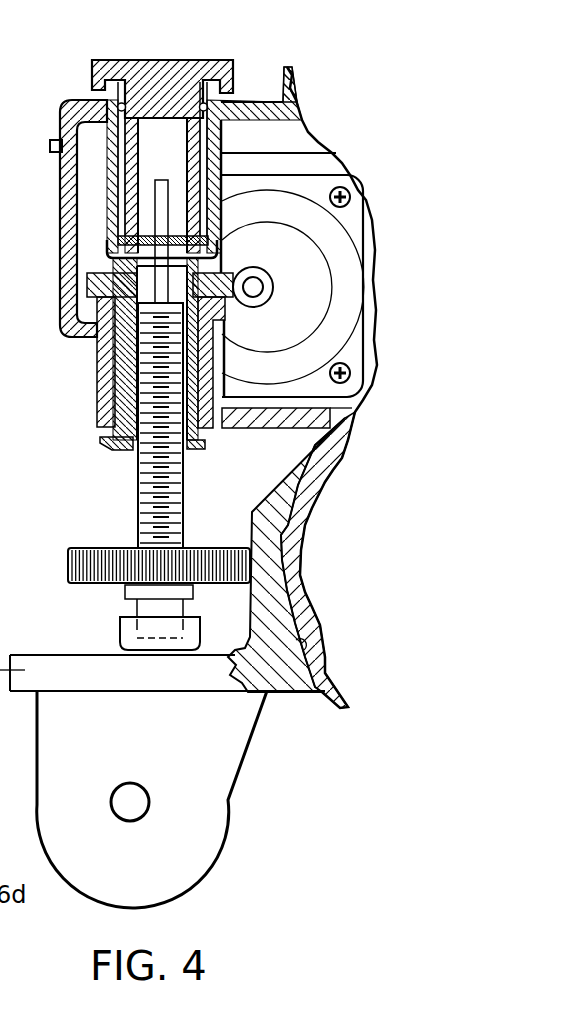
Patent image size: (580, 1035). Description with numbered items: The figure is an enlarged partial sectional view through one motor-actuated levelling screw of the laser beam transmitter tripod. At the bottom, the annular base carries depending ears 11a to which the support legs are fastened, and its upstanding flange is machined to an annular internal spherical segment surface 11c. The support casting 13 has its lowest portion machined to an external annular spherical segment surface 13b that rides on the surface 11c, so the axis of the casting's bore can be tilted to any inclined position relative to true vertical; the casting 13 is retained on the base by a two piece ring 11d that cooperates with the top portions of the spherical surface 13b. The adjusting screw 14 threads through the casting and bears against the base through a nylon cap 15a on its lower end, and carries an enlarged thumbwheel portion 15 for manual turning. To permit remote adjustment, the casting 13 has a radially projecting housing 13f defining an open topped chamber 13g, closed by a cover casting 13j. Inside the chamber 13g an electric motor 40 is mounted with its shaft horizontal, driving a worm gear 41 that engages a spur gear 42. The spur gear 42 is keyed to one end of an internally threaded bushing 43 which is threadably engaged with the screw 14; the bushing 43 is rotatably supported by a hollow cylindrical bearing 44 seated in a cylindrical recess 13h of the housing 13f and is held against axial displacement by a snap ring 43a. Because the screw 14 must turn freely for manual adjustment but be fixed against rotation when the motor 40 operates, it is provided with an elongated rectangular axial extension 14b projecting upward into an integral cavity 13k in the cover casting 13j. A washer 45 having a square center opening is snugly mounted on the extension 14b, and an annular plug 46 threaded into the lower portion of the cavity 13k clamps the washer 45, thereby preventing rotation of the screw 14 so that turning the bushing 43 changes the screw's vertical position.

The depending ears 11a is at (233, 802).
The annular internal spherical segment surface 11c is at (258, 691).
The two piece ring 11d is at (268, 541).
The support casting 13 is at (332, 404).
The external annular spherical segment surface 13b is at (306, 609).
The radially projecting housing 13f is at (72, 185).
The open topped chamber 13g is at (83, 246).
The cylindrical recess 13h is at (120, 398).
The cover casting 13j is at (250, 102).
The integral cavity 13k is at (190, 134).
The adjusting screw 14 is at (143, 508).
The elongated rectangular axial extension 14b is at (130, 172).
The thumbwheel portion 15 is at (67, 571).
The nylon cap 15a is at (120, 627).
The electric motor 40 is at (334, 175).
The worm gear 41 is at (266, 273).
The spur gear 42 is at (213, 272).
The internally threaded bushing 43 is at (196, 314).
The snap ring 43a is at (202, 449).
The hollow cylindrical bearing 44 is at (110, 438).
The washer 45 is at (172, 235).
The annular plug 46 is at (147, 60).